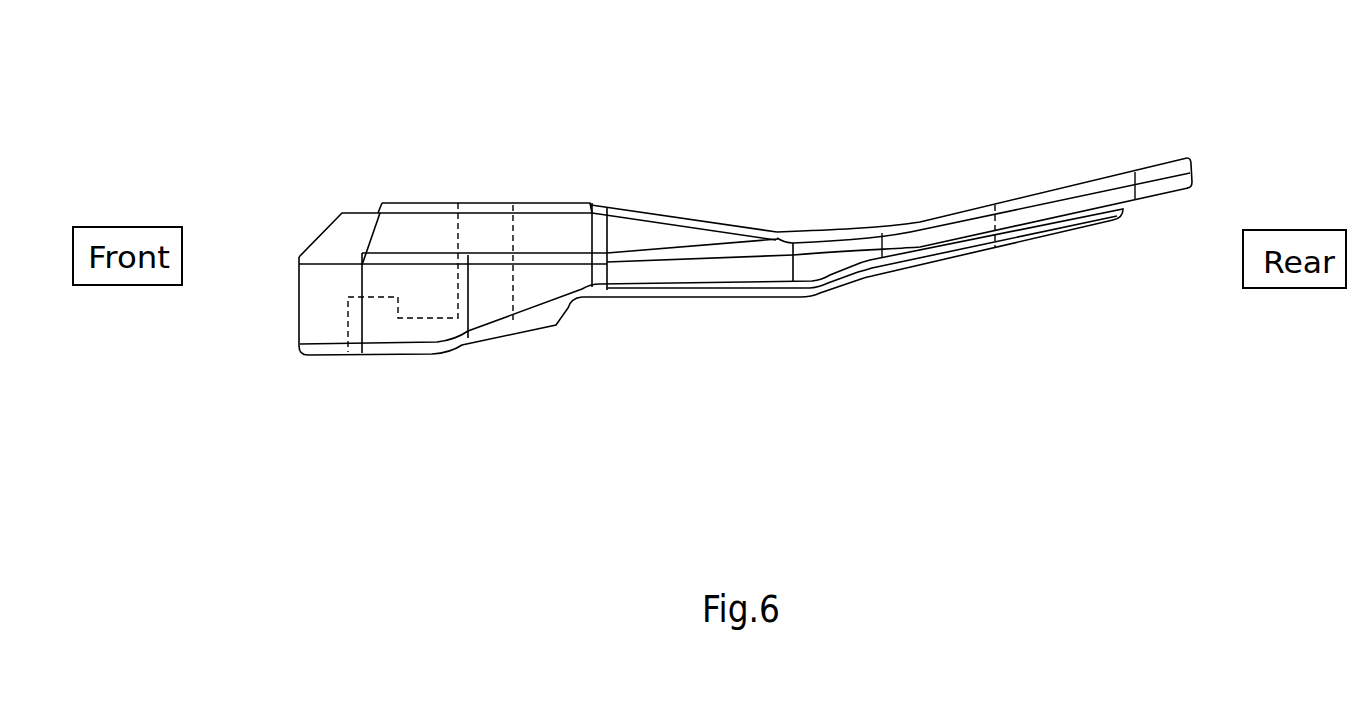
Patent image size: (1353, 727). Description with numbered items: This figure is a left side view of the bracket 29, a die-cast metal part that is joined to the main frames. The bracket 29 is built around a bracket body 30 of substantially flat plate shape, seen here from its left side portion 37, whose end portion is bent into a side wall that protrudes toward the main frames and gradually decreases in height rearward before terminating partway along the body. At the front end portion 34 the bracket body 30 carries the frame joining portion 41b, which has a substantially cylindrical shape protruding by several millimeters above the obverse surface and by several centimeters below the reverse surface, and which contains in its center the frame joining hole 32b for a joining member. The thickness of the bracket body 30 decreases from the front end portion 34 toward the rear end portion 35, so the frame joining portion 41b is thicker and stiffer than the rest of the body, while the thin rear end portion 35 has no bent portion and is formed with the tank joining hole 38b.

The bracket 29 is at (416, 380).
The bracket body 30 is at (642, 233).
The front end portion 34 is at (298, 333).
The rear end portion 35 is at (1192, 158).
The left side portion 37 is at (748, 272).
The frame joining portion 41b is at (410, 203).
The frame joining hole 32b is at (512, 234).
The tank joining hole 38b is at (1135, 187).